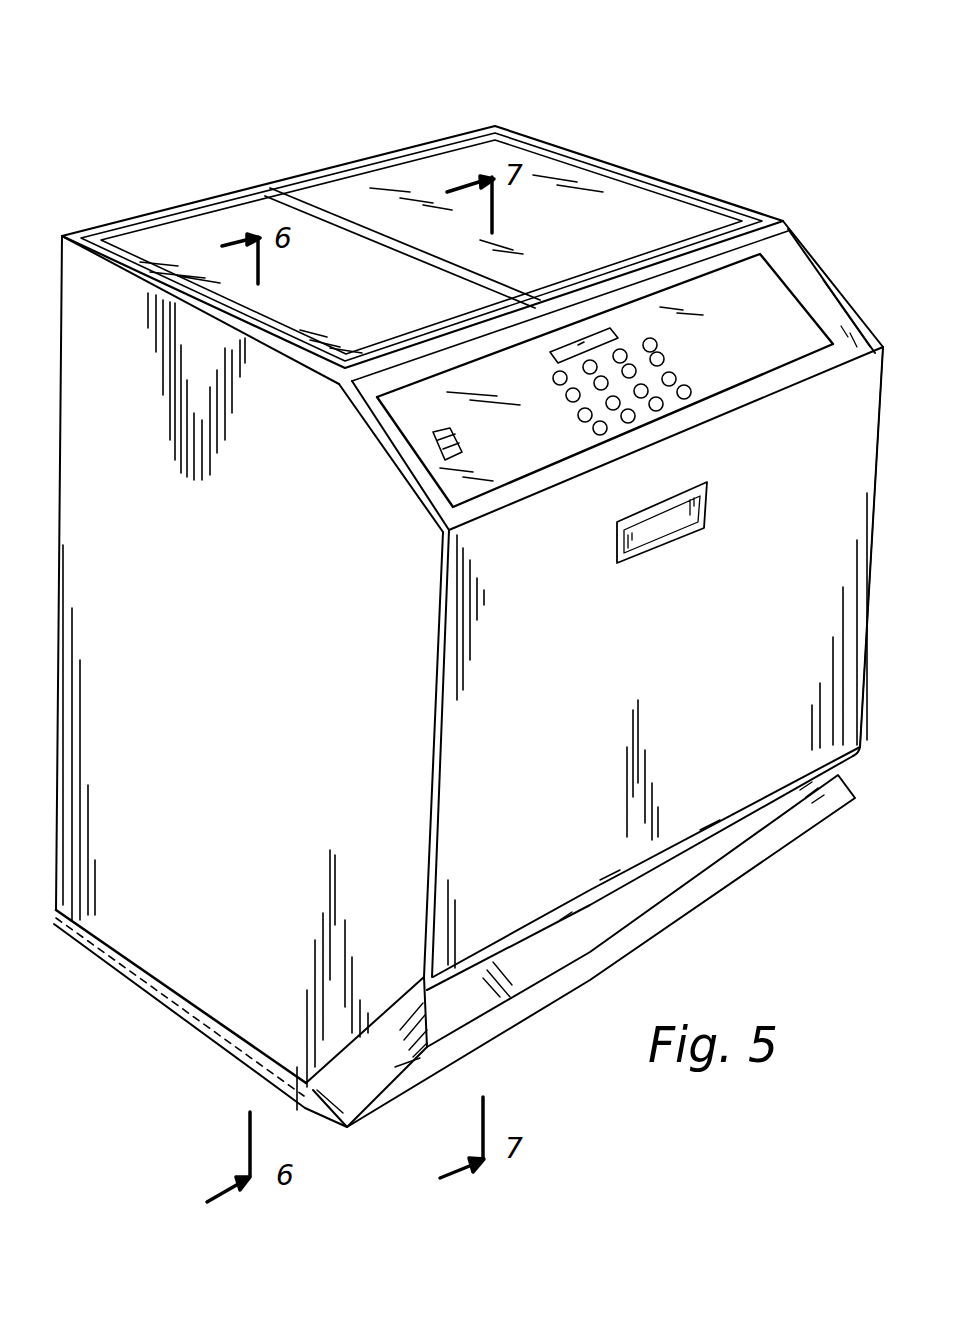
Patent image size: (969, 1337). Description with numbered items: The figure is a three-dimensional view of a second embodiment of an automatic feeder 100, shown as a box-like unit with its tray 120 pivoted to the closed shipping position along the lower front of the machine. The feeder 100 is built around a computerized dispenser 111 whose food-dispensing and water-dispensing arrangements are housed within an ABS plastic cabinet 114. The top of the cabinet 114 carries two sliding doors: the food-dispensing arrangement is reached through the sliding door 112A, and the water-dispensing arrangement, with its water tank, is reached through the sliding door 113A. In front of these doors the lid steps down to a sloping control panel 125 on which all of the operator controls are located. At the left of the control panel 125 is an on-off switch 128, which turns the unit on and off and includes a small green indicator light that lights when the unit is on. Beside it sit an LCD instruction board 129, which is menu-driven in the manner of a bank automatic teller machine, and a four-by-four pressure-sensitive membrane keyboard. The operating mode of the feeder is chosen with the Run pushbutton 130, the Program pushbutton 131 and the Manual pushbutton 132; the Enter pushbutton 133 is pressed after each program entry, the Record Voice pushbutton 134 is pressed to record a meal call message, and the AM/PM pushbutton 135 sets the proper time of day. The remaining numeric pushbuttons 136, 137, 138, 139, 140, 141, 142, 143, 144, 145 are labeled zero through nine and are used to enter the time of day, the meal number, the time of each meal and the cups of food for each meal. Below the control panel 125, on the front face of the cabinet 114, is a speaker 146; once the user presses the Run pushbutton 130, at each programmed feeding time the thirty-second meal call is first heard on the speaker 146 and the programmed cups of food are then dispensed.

The automatic feeder 100 is at (172, 122).
The computerized dispenser 111 is at (606, 160).
The sliding door 112A is at (238, 215).
The sliding door 113A is at (356, 190).
The cabinet 114 is at (862, 720).
The tray 120 is at (812, 815).
The control panel 125 is at (765, 287).
The on-off switch 128 is at (432, 434).
The LCD instruction board 129 is at (600, 376).
The Run pushbutton 130 is at (553, 376).
The Program pushbutton 131 is at (583, 365).
The Manual pushbutton 132 is at (600, 332).
The Enter pushbutton 133 is at (633, 365).
The Record Voice pushbutton 134 is at (570, 402).
The AM/PM pushbutton 135 is at (616, 350).
The numeric pushbutton 136 is at (651, 338).
The numeric pushbutton 137 is at (662, 354).
The numeric pushbutton 138 is at (586, 422).
The numeric pushbutton 139 is at (619, 407).
The numeric pushbutton 140 is at (648, 393).
The numeric pushbutton 141 is at (675, 374).
The numeric pushbutton 142 is at (604, 434).
The numeric pushbutton 143 is at (632, 422).
The numeric pushbutton 144 is at (662, 409).
The numeric pushbutton 145 is at (691, 391).
The speaker 146 is at (622, 558).